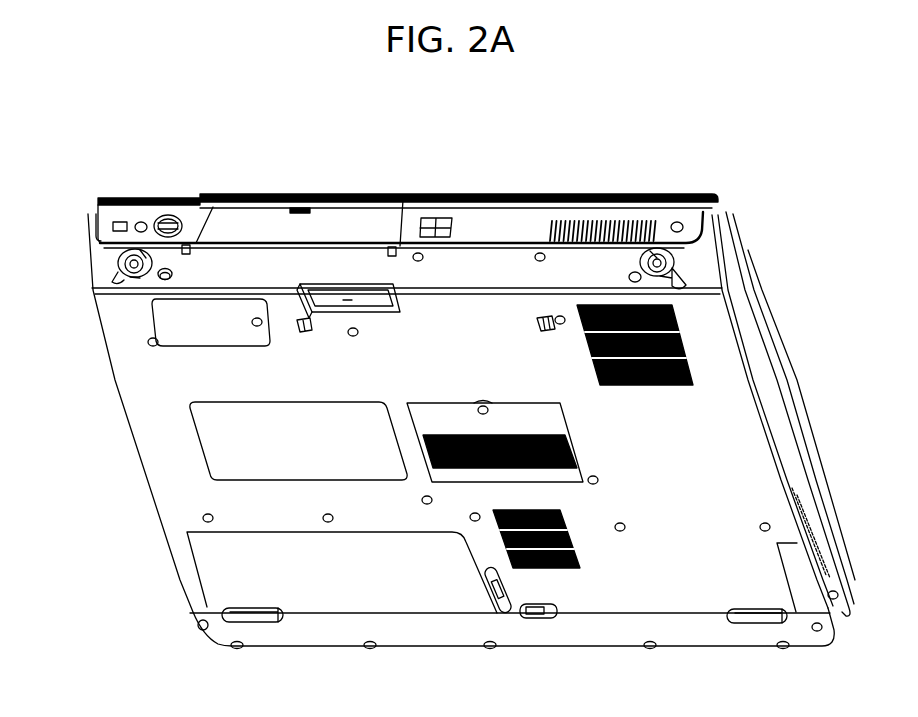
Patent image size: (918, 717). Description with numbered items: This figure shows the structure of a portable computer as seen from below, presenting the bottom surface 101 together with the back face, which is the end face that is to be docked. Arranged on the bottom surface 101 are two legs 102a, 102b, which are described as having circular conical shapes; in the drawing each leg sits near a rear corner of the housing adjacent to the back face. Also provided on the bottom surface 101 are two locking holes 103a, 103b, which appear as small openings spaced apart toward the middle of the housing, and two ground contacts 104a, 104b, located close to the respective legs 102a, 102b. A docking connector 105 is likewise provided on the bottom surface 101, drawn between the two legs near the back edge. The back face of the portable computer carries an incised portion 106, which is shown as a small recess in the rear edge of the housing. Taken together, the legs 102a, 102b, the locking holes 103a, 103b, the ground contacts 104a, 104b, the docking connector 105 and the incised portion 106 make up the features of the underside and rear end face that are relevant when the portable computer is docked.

The bottom surface 101 is at (738, 433).
The leg 102a is at (667, 260).
The leg 102b is at (123, 277).
The locking hole 103a is at (538, 323).
The locking hole 103b is at (300, 332).
The ground contact 104a is at (627, 277).
The ground contact 104b is at (150, 262).
The docking connector 105 is at (347, 290).
The incised portion 106 is at (442, 218).